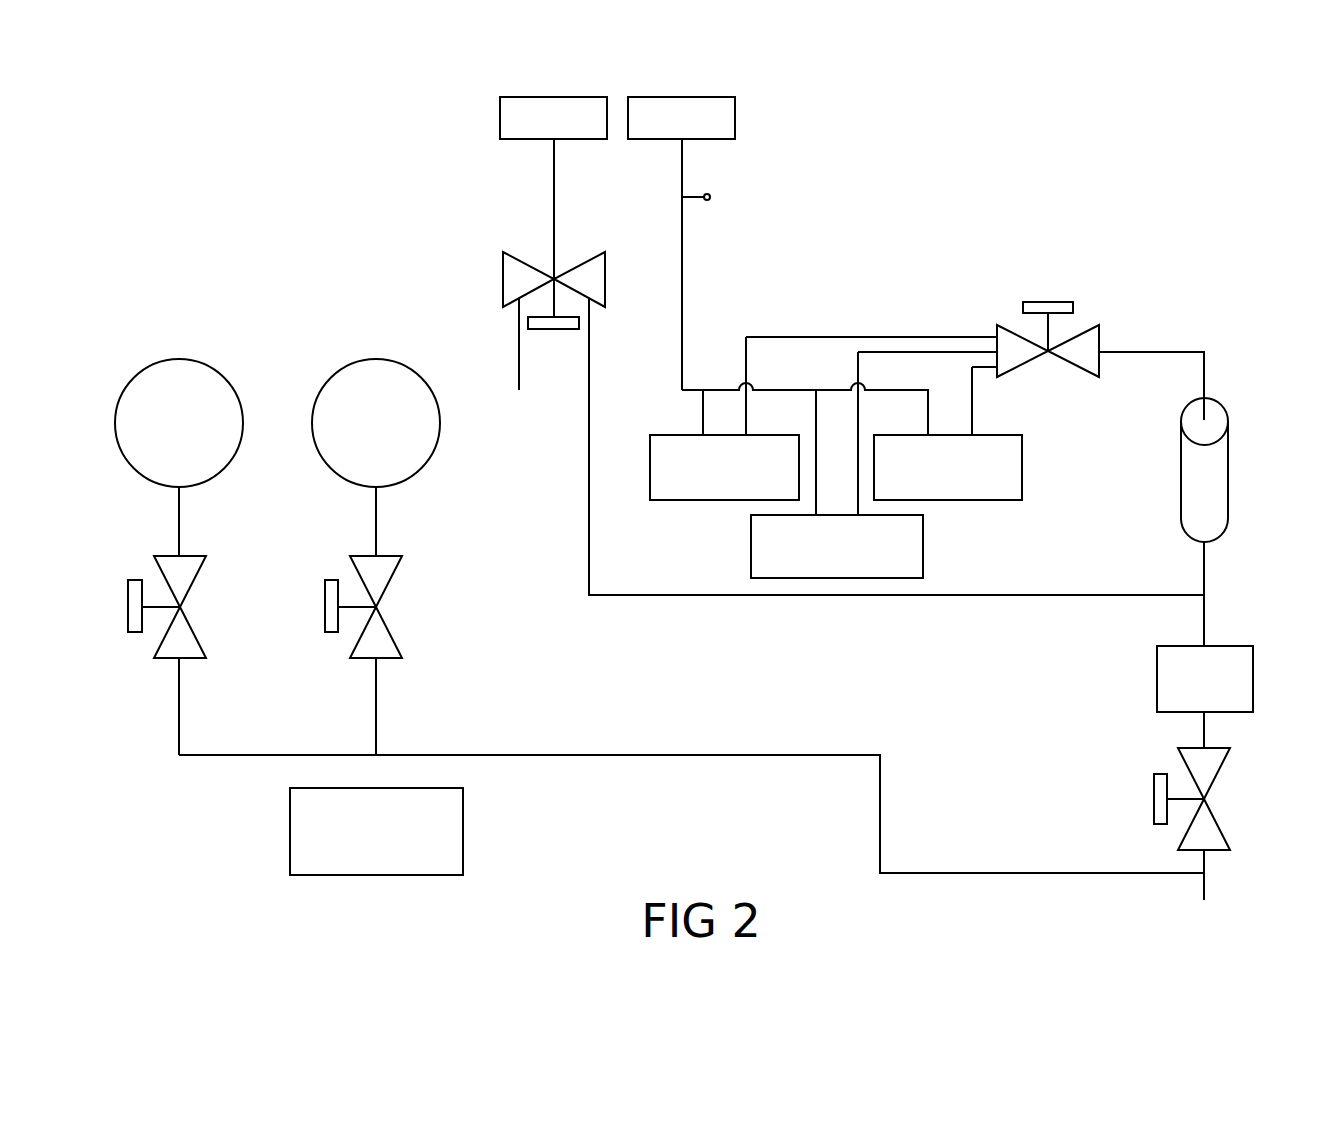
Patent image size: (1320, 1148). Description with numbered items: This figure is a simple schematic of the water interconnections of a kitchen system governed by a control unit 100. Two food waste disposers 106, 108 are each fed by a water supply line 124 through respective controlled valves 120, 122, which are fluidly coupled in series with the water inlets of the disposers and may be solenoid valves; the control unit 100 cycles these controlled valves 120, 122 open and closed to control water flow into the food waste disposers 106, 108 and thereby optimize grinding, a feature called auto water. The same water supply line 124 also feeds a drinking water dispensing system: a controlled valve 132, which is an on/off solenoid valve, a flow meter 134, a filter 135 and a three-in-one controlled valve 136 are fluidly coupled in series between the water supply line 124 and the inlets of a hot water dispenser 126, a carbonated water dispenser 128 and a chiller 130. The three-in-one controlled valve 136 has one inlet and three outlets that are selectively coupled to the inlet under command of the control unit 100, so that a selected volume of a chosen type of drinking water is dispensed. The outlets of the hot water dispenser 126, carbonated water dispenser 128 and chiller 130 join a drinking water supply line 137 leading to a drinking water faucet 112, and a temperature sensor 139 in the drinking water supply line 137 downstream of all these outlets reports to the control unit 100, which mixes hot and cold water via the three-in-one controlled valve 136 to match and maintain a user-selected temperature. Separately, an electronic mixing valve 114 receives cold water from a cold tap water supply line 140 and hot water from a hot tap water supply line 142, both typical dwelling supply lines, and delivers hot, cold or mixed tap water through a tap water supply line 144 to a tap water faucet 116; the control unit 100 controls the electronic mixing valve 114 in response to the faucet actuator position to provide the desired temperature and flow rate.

The control unit 100 is at (376, 875).
The food waste disposer 106 is at (179, 359).
The food waste disposer 108 is at (376, 359).
The drinking water faucet 112 is at (682, 97).
The electronic mixing valve 114 is at (503, 280).
The tap water faucet 116 is at (554, 97).
The controlled valve 120 is at (183, 605).
The controlled valve 122 is at (380, 605).
The water supply line 124 is at (1204, 887).
The hot water dispenser 126 is at (697, 500).
The carbonated water dispenser 128 is at (923, 547).
The chiller 130 is at (973, 500).
The controlled valve 132 is at (1208, 797).
The flow meter 134 is at (1157, 679).
The filter 135 is at (1181, 470).
The 3-in-1 controlled valve 136 is at (1099, 325).
The drinking water supply line 137 is at (682, 302).
The temperature sensor 139 is at (710, 199).
The cold tap water supply line 140 is at (663, 595).
The hot tap water supply line 142 is at (519, 355).
The tap water supply line 144 is at (554, 228).